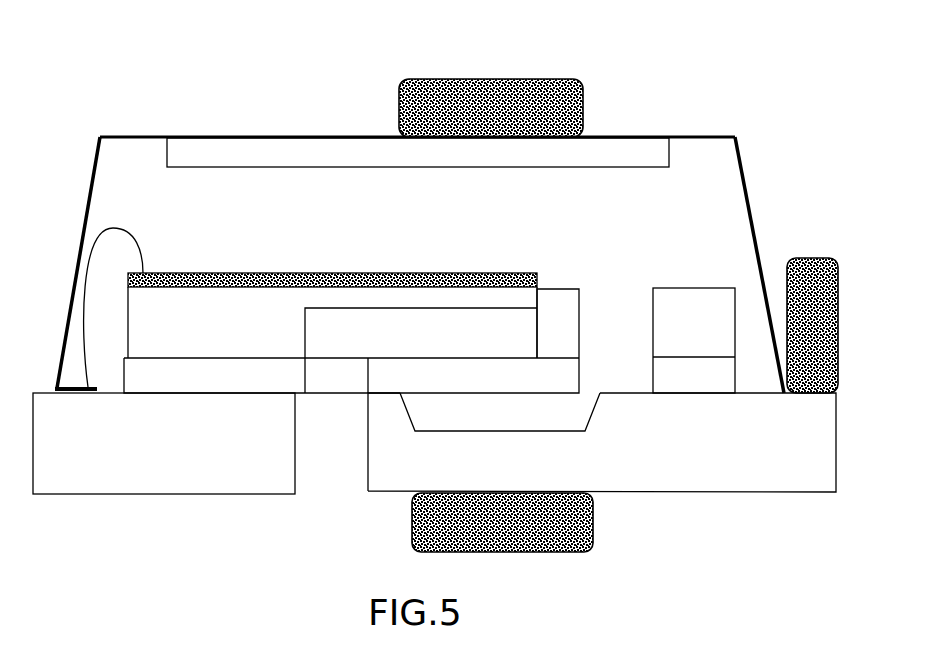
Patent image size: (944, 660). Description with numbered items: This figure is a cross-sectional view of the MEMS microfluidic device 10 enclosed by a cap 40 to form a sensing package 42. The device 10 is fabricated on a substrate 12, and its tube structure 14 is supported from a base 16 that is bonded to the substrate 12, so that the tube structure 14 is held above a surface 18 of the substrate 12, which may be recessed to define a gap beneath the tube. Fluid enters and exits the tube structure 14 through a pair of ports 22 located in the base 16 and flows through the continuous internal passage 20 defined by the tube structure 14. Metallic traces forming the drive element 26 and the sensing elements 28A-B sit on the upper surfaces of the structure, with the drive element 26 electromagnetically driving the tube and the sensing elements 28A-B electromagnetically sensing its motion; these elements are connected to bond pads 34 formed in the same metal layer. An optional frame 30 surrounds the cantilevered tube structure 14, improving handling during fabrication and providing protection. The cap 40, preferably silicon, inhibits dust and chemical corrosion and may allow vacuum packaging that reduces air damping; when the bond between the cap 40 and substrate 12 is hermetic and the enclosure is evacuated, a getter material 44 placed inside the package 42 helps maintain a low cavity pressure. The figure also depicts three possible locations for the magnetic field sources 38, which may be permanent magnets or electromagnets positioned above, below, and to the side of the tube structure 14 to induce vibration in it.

The MEMS microfluidic device 10 is at (140, 200).
The substrate 12 is at (787, 485).
The tube structure 14 is at (594, 294).
The base 16 is at (205, 345).
The substrate surface 18 is at (530, 432).
The internal passage 20 is at (525, 318).
The ports 22 is at (322, 372).
The drive element 26 is at (332, 257).
The sensing elements 28A-B is at (358, 274).
The frame 30 is at (700, 303).
The bond pads 34 is at (150, 272).
The magnetic field sources 38 is at (581, 82).
The cap 40 is at (135, 137).
The sensing package 42 is at (346, 74).
The getter material 44 is at (321, 166).